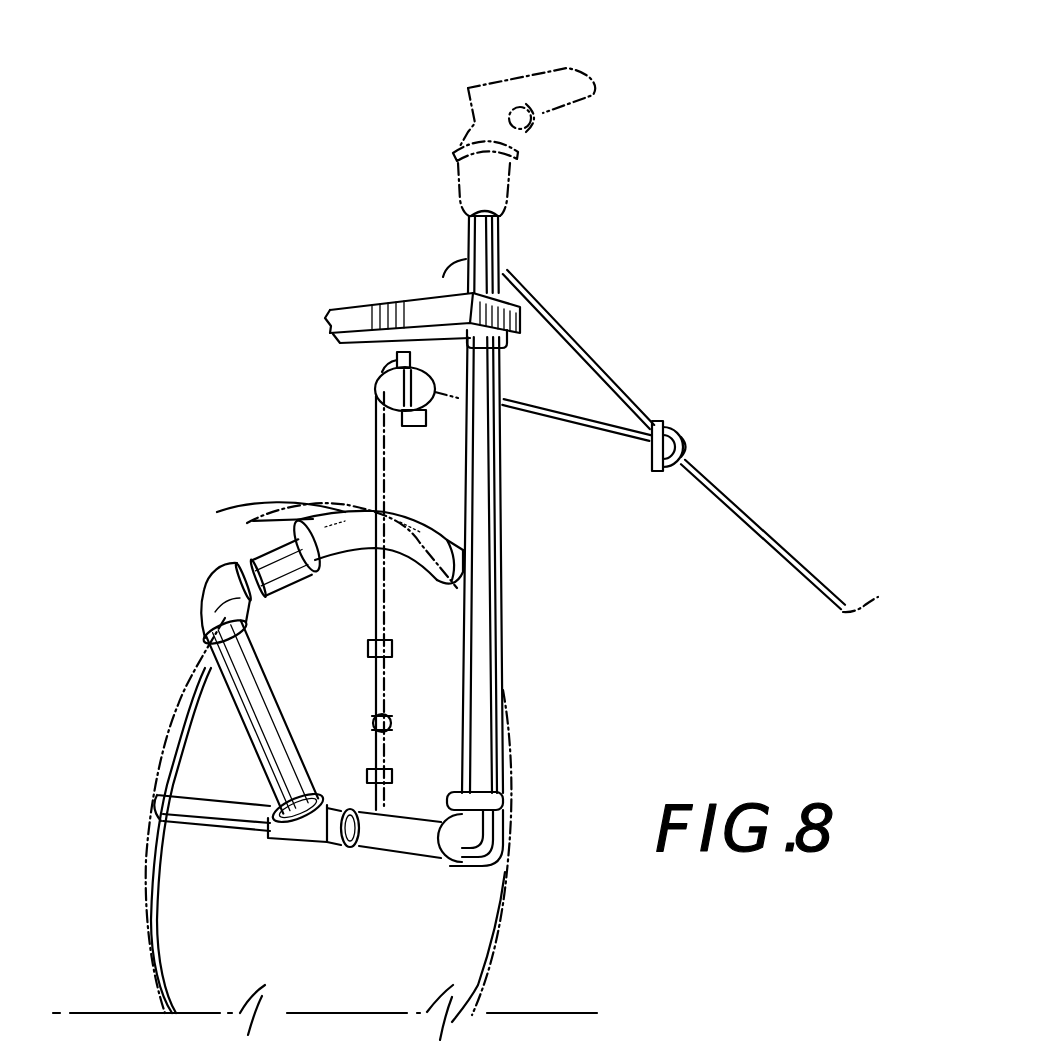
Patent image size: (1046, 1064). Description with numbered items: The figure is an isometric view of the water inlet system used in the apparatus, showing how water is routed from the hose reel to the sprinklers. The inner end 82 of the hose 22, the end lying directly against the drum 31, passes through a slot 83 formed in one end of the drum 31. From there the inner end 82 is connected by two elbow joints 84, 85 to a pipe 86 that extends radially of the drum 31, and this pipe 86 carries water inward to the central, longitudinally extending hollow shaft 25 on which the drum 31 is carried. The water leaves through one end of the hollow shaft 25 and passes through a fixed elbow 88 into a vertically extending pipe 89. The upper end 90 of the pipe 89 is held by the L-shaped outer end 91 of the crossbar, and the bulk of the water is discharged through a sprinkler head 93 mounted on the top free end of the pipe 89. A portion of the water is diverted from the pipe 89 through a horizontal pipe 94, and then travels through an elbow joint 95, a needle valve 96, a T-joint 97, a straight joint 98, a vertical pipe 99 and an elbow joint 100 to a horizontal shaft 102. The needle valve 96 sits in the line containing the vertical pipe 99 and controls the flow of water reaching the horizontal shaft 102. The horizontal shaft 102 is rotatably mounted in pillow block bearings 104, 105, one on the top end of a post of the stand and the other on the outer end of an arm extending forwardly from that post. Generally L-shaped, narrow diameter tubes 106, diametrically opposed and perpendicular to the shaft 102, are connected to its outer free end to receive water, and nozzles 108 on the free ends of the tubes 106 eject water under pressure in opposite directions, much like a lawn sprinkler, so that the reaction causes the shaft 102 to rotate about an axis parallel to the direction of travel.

The hose 22 is at (482, 555).
The hollow shaft 25 is at (220, 831).
The drum 31 is at (147, 880).
The inner end of the hose 82 is at (307, 513).
The slot 83 is at (220, 508).
The elbow joint 84 is at (295, 587).
The elbow joint 85 is at (197, 597).
The pipe 86 is at (237, 673).
The fixed elbow 88 is at (503, 870).
The vertically extending pipe 89 is at (483, 740).
The upper end of the pipe 90 is at (492, 247).
The L-shaped outer end of the crossbar 91 is at (430, 305).
The sprinkler head 93 is at (563, 117).
The horizontal pipe 94 is at (413, 845).
The elbow joint 95 is at (374, 845).
The needle valve 96 is at (395, 787).
The T-joint 97 is at (373, 720).
The straight joint 98 is at (392, 653).
The vertical pipe 99 is at (372, 472).
The elbow joint 100 is at (373, 380).
The horizontal shaft 102 is at (545, 423).
The pillow block bearing 104 is at (422, 423).
The pillow block bearing 105 is at (690, 437).
The L-shaped tubes 106 is at (605, 338).
The nozzles 108 is at (440, 268).